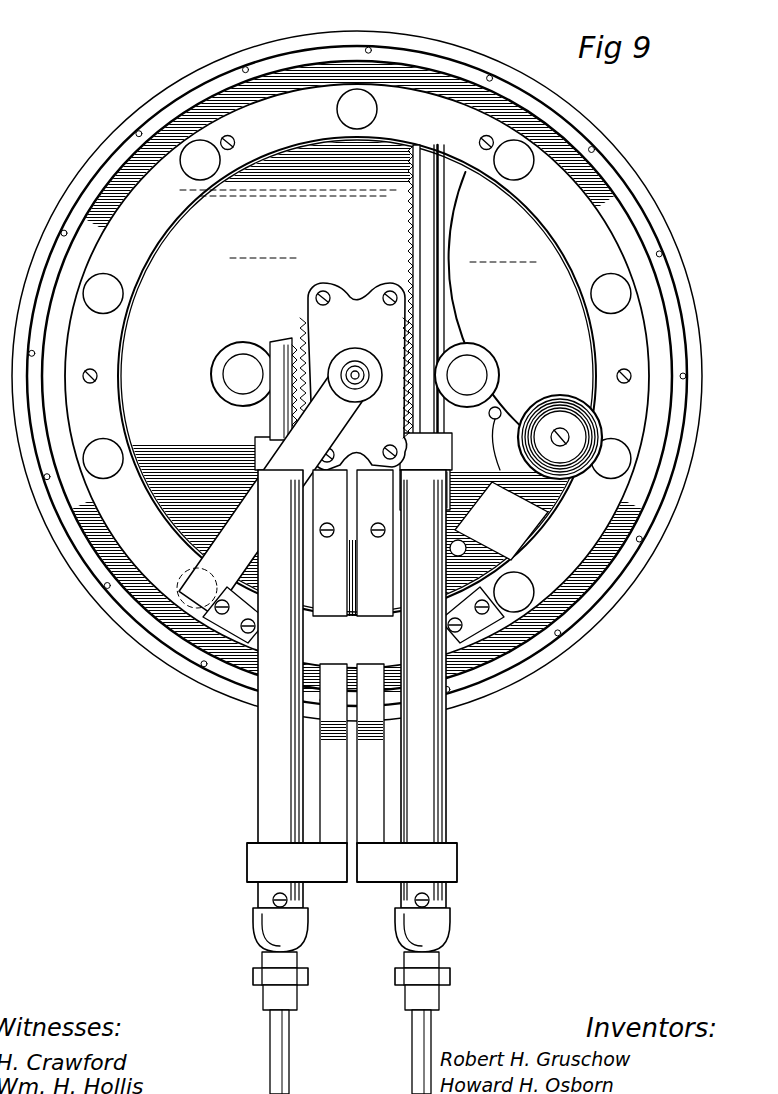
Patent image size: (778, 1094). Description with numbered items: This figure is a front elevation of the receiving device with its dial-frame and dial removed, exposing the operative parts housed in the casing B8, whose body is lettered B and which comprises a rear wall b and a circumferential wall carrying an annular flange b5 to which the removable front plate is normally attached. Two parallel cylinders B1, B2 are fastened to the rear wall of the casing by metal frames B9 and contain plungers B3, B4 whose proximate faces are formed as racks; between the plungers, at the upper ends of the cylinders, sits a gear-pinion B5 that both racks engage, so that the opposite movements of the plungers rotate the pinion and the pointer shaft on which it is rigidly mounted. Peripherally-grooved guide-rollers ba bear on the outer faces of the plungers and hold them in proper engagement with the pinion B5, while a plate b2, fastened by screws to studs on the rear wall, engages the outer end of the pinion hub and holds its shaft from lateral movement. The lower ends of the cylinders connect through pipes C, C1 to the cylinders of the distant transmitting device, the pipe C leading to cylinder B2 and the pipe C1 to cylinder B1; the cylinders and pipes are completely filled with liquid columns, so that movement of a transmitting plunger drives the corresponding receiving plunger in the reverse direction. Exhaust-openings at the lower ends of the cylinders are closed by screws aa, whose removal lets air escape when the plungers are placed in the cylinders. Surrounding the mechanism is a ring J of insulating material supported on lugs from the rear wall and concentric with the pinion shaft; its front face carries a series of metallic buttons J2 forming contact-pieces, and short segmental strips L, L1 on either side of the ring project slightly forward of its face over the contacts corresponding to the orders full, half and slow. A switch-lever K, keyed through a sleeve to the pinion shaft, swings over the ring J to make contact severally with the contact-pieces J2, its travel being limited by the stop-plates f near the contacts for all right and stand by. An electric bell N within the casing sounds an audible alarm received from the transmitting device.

The casing B is at (357, 376).
The casing B8 is at (668, 262).
The annular flange b5 is at (36, 535).
The segmental strip L is at (118, 360).
The segmental strip L1 is at (562, 258).
The ring J is at (326, 122).
The metallic buttons J2 is at (517, 166).
The plunger B3 is at (434, 304).
The guide-rollers ba is at (512, 360).
The rear wall b is at (519, 390).
The plunger B4 is at (283, 345).
The gear-pinion B5 is at (354, 356).
The plate b2 is at (352, 297).
The switch-lever K is at (279, 481).
The metal frames B9 is at (348, 612).
The electric bell N is at (562, 431).
The brackets f is at (296, 618).
The cylinder B2 is at (270, 766).
The cylinder B1 is at (448, 763).
The screws aa is at (290, 900).
The pipe C is at (270, 1040).
The pipe C1 is at (432, 1038).